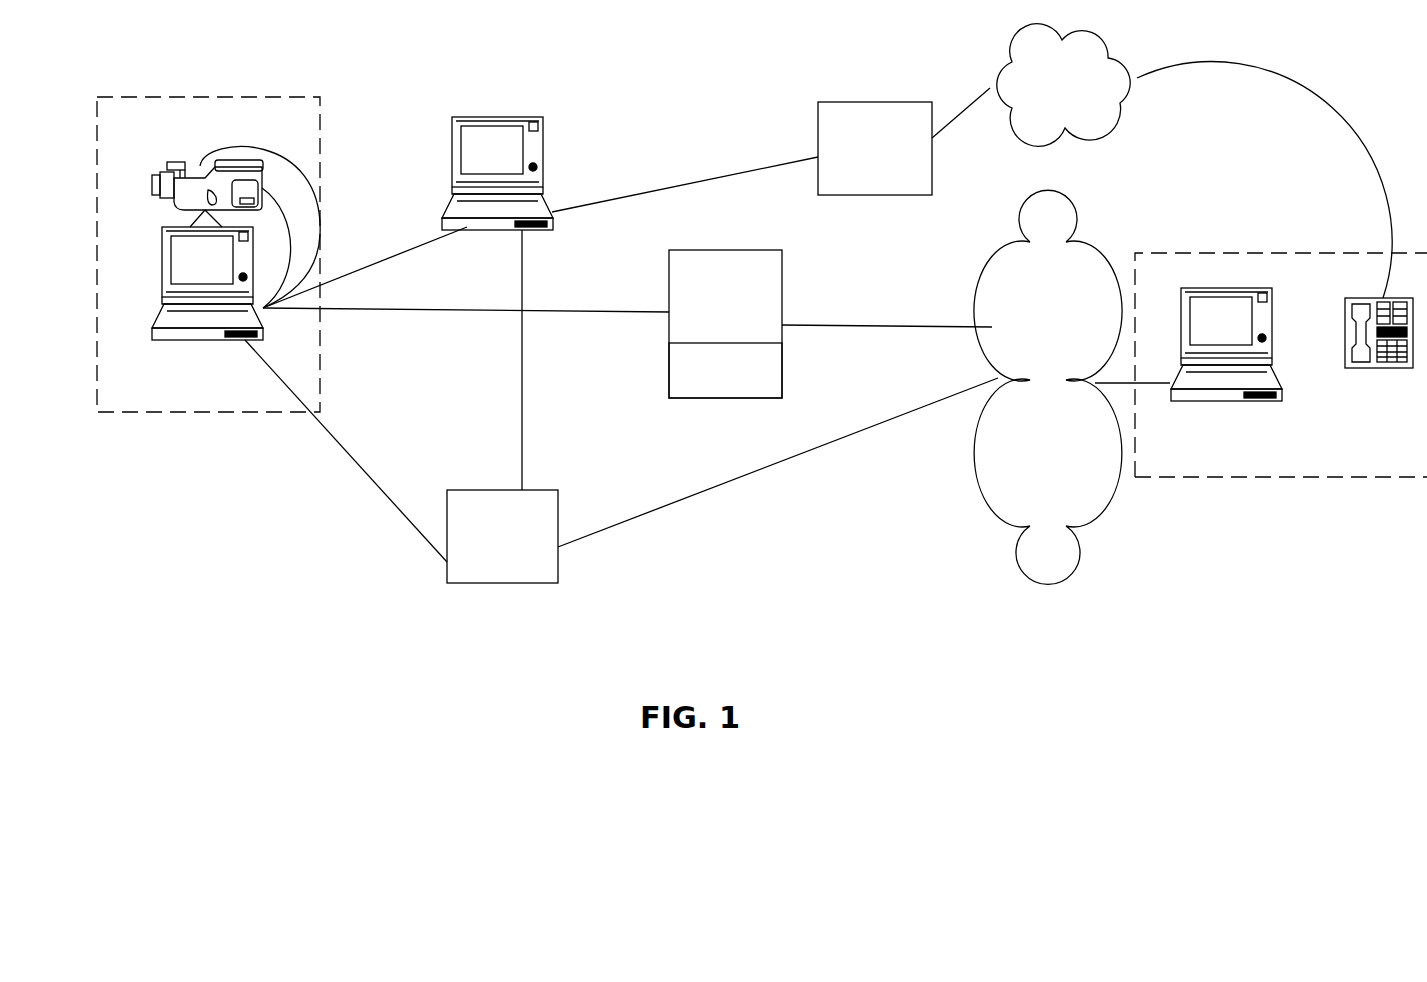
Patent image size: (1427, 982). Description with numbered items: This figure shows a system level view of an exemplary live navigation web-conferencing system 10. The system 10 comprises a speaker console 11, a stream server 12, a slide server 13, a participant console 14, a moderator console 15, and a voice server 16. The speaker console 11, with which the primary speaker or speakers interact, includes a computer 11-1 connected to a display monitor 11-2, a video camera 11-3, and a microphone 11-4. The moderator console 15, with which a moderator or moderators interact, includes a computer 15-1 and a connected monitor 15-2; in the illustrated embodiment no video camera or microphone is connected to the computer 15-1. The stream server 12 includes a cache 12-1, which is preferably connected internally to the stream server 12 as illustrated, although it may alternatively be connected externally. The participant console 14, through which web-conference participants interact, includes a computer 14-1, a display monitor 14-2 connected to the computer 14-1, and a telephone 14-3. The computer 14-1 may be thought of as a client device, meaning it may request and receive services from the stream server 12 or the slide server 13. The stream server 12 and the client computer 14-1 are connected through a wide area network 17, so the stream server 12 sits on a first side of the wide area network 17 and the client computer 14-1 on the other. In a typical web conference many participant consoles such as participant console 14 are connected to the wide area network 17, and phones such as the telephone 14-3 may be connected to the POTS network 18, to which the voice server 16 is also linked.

The live navigation web-conferencing system 10 is at (762, 391).
The speaker console 11 is at (208, 258).
The computer 11-1 is at (185, 318).
The display monitor 11-2 is at (180, 262).
The video camera 11-3 is at (216, 227).
The microphone 11-4 is at (162, 158).
The stream server 12 is at (723, 329).
The cache 12-1 is at (757, 398).
The slide server 13 is at (537, 583).
The participant console 14 is at (1281, 370).
The computer 14-1 is at (1249, 379).
The display monitor 14-2 is at (1250, 323).
The telephone 14-3 is at (1375, 317).
The moderator console 15 is at (482, 175).
The computer 15-1 is at (515, 230).
The monitor 15-2 is at (466, 152).
The voice server 16 is at (838, 195).
The wide area network 17 is at (1071, 372).
The POTS network 18 is at (1083, 140).